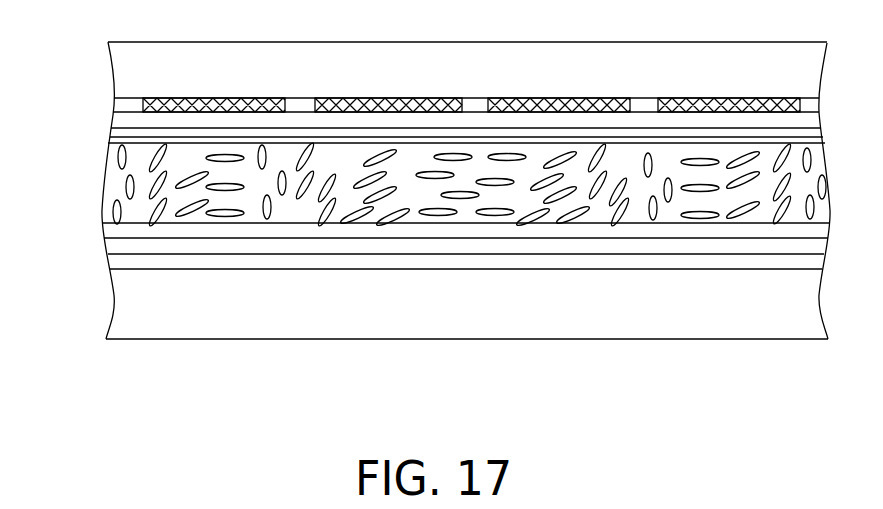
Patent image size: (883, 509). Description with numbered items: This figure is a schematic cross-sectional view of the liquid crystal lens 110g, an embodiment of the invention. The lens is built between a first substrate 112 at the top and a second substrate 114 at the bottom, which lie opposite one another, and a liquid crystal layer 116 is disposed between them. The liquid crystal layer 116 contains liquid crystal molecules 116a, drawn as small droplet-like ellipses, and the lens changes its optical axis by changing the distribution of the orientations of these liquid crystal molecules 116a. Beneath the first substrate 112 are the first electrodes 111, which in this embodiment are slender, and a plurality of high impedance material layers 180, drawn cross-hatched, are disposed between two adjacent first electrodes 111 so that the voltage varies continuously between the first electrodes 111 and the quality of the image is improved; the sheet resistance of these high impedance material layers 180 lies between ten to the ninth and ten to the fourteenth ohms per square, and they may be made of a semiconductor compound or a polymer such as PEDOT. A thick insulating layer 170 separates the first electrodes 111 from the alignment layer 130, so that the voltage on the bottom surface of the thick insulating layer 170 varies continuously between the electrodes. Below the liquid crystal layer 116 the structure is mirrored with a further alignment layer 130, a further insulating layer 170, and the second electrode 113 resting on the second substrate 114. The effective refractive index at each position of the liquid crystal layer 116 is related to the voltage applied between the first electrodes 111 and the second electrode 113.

The liquid crystal lens 110g is at (843, 413).
The first substrate 112 is at (125, 47).
The high impedance material layers 180 is at (182, 100).
The first electrodes 111 is at (124, 103).
The thick insulating layer 170 is at (127, 122).
The alignment layer 130 is at (127, 136).
The liquid crystal layer 116 is at (113, 175).
The liquid crystal molecules 116a is at (118, 208).
The second electrode 113 is at (117, 263).
The second substrate 114 is at (124, 316).